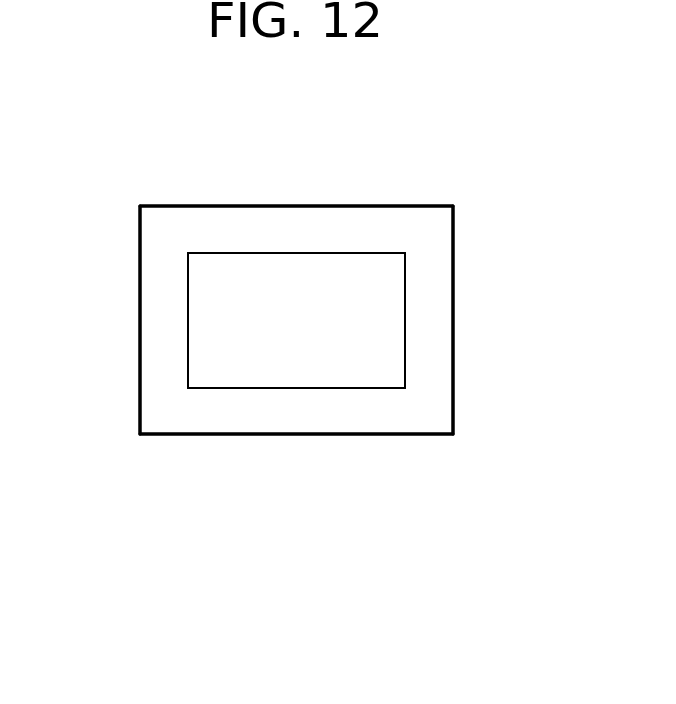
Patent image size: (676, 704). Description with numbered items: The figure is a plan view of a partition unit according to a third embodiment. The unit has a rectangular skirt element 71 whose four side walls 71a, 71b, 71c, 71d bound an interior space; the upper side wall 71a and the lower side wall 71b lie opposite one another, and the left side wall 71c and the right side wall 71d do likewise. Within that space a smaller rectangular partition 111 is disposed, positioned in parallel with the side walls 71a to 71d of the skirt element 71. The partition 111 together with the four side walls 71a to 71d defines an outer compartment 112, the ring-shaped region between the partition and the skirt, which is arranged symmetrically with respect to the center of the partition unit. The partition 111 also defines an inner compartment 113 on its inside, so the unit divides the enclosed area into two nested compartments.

The skirt element 71 is at (294, 302).
The side wall 71a is at (240, 206).
The side wall 71b is at (310, 435).
The side wall 71c is at (140, 333).
The side wall 71d is at (455, 327).
The partition 111 is at (405, 368).
The compartment 112 is at (440, 240).
The compartment 113 is at (320, 331).